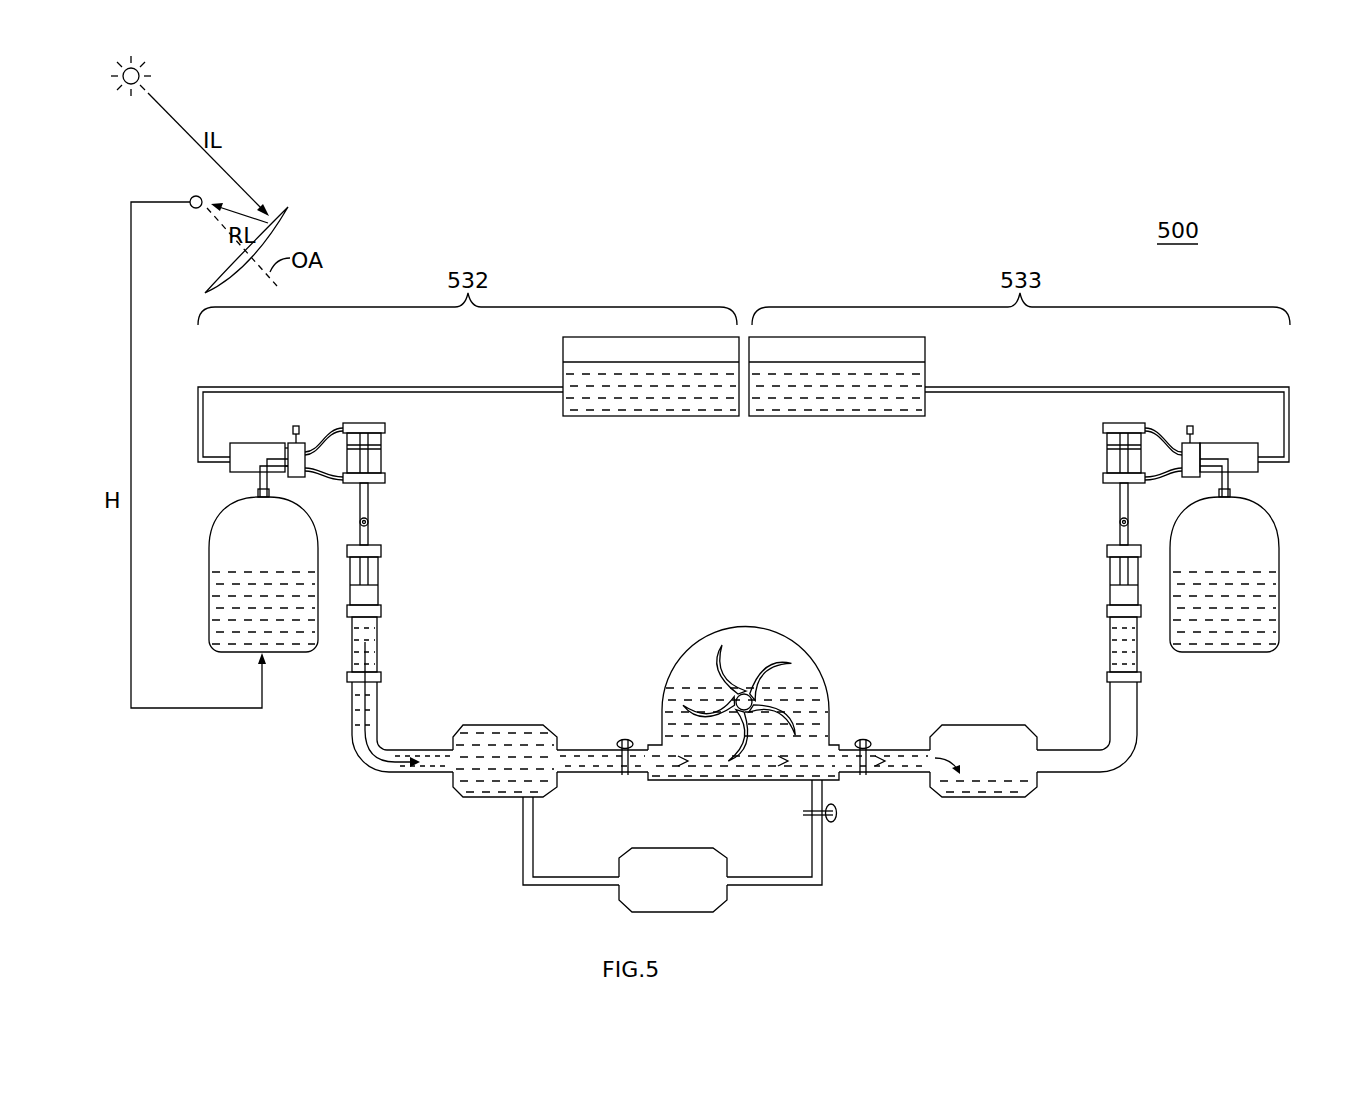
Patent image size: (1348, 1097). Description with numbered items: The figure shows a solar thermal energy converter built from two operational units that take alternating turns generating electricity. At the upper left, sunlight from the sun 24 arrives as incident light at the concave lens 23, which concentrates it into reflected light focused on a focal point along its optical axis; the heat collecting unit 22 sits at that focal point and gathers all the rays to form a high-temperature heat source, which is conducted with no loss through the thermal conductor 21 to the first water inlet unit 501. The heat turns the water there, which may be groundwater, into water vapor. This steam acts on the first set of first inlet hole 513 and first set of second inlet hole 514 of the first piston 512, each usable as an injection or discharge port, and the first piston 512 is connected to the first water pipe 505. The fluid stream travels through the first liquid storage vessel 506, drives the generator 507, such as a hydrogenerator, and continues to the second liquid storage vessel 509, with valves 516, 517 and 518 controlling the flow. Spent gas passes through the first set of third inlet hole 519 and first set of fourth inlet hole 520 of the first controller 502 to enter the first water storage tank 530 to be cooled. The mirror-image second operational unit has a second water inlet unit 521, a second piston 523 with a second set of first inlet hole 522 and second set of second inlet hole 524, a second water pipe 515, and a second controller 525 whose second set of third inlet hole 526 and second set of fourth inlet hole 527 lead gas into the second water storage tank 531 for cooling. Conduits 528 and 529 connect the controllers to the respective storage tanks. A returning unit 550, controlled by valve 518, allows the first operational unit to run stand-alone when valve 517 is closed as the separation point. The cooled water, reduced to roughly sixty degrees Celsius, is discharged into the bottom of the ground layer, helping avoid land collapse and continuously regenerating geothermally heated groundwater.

The thermal conductor 21 is at (130, 345).
The heat collecting unit 22 is at (191, 198).
The concave lens 23 is at (291, 211).
The sun 24 is at (125, 88).
The first water inlet unit 501 is at (208, 605).
The first controller 502 is at (298, 425).
The first water pipe 505 is at (400, 720).
The first liquid storage vessel 506 is at (504, 718).
The generator 507 is at (762, 624).
The second liquid storage vessel 509 is at (1004, 797).
The first piston 512 is at (386, 446).
The first set of first inlet hole 513 is at (386, 427).
The first set of second inlet hole 514 is at (386, 476).
The second water pipe 515 is at (1150, 723).
The valve 516 is at (625, 740).
The valve 517 is at (863, 740).
The valve 518 is at (842, 826).
The first set of third inlet hole 519 is at (236, 443).
The first set of fourth inlet hole 520 is at (247, 472).
The second water inlet unit 521 is at (1280, 605).
The second set of first inlet hole 522 is at (1102, 427).
The second piston 523 is at (1102, 446).
The second set of second inlet hole 524 is at (1102, 476).
The second controller 525 is at (1190, 425).
The second set of third inlet hole 526 is at (1249, 443).
The second set of fourth inlet hole 527 is at (1242, 472).
The left conduit 528 is at (365, 386).
The right conduit 529 is at (1121, 386).
The first water storage tank 530 is at (663, 418).
The second water storage tank 531 is at (825, 418).
The returning unit 550 is at (756, 906).